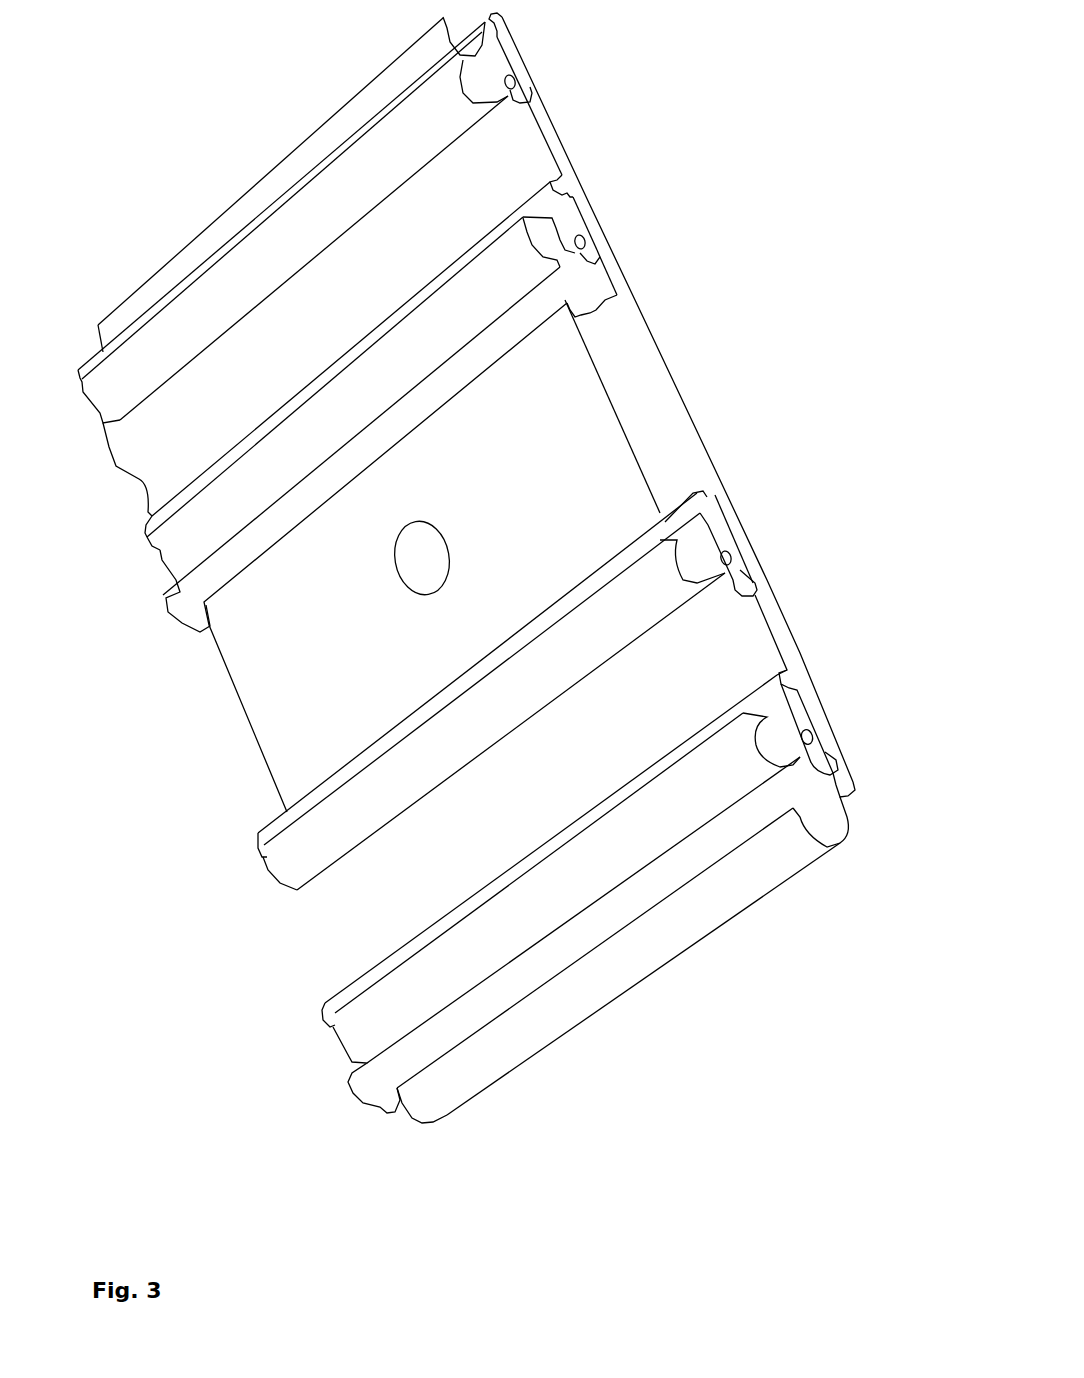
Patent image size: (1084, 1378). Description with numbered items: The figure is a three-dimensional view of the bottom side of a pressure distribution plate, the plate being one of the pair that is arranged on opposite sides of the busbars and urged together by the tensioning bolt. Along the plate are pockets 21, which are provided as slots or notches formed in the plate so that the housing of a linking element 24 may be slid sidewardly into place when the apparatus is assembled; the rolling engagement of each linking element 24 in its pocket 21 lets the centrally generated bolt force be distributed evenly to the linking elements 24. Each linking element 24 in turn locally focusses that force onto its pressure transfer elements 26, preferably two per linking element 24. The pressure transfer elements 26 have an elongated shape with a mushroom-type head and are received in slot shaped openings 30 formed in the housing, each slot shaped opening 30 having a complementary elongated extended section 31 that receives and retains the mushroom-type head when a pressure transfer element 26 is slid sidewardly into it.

The linking element 24 is at (566, 142).
The pressure transfer element 26 is at (108, 393).
The slot shaped opening 30 is at (586, 245).
The elongated extended section 31 is at (574, 199).
The pocket 21 is at (600, 309).